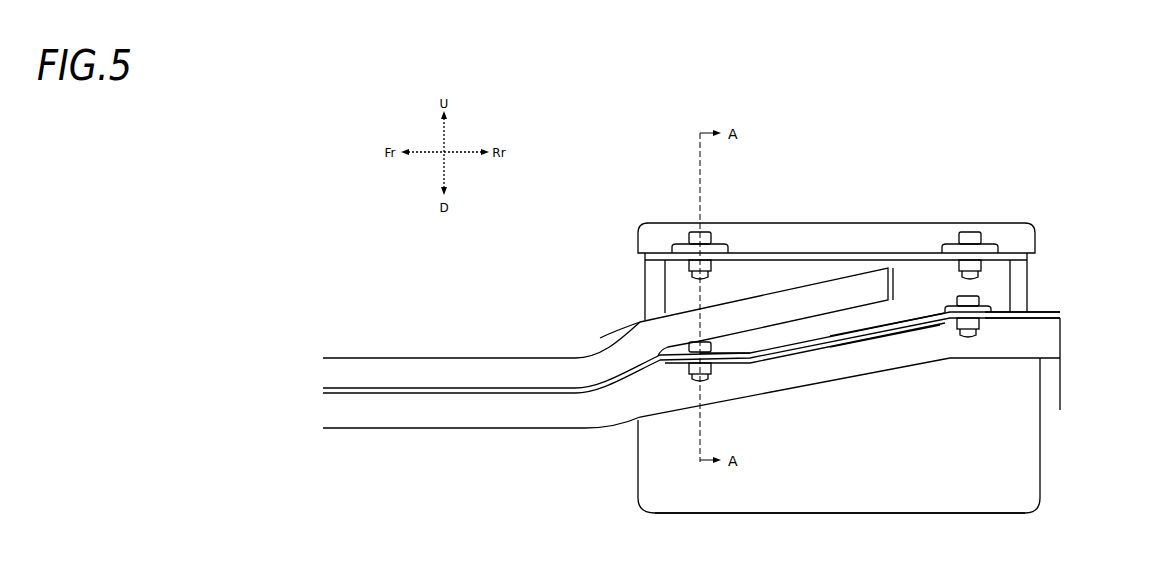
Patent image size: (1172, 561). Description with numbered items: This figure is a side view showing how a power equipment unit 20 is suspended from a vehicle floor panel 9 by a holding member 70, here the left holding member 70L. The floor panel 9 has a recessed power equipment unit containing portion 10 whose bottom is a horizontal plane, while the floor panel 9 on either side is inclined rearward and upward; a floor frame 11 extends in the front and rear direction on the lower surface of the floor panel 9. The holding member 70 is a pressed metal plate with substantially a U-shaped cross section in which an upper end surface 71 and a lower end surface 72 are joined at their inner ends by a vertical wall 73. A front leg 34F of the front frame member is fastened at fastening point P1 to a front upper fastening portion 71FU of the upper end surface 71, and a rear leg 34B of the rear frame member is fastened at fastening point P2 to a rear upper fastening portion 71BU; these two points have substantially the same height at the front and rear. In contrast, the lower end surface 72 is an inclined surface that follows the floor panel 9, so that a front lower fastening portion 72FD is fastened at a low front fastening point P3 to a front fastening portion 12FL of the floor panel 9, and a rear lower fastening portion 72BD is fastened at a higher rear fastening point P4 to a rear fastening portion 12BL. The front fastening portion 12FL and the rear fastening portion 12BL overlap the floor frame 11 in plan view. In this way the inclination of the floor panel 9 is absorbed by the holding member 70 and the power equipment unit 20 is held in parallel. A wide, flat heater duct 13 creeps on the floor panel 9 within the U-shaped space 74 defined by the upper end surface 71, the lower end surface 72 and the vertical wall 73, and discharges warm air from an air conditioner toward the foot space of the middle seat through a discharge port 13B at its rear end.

The floor panel 9 is at (1040, 312).
The power equipment unit containing portion 10 is at (1044, 440).
The floor frame 11 is at (528, 410).
The front fastening portion 12FL is at (672, 367).
The rear fastening portion 12BL is at (990, 322).
The heater duct 13 is at (463, 380).
The discharge port 13B is at (900, 335).
The power equipment unit 20 is at (836, 206).
The front leg 34F is at (678, 242).
The rear leg 34B is at (944, 240).
The holding member 70 is at (758, 401).
The left holding member 70L is at (772, 358).
The upper end surface 71 is at (870, 252).
The front upper fastening portion 71FU is at (707, 252).
The rear upper fastening portion 71BU is at (988, 252).
The lower end surface 72 is at (822, 330).
The front lower fastening portion 72FD is at (665, 343).
The rear lower fastening portion 72BD is at (1000, 305).
The vertical wall 73 is at (780, 278).
The U-shaped space 74 is at (862, 322).
The fastening point P1 is at (687, 230).
The fastening point P2 is at (955, 230).
The fastening point P3 is at (719, 372).
The fastening point P4 is at (953, 335).